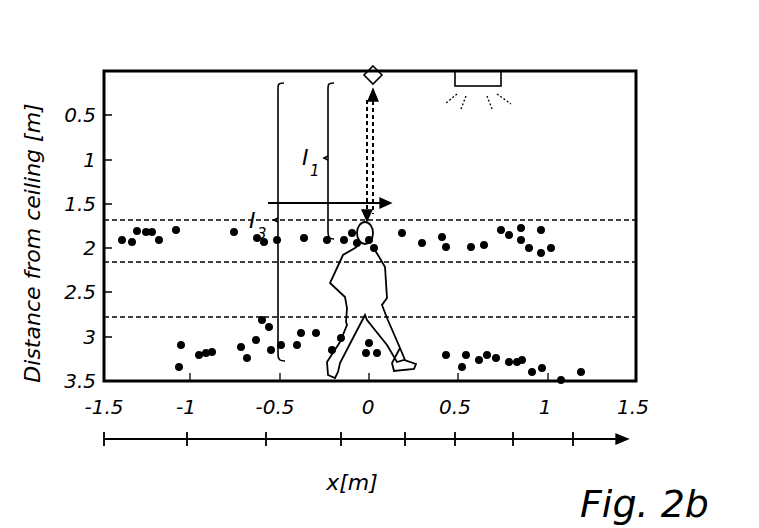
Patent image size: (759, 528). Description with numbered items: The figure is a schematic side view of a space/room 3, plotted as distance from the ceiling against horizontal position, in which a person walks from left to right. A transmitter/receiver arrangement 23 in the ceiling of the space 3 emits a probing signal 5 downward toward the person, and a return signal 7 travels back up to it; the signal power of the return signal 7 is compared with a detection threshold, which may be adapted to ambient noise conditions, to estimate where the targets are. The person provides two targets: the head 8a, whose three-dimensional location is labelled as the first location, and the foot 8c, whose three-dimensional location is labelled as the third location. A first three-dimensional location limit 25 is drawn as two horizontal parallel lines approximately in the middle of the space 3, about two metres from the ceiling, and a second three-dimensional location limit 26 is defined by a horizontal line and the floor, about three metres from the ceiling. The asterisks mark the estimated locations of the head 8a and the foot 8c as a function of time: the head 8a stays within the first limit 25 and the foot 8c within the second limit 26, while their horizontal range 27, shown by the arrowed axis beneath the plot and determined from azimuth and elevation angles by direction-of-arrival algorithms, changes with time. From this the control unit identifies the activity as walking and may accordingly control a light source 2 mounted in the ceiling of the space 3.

The light source 2 is at (480, 77).
The space/room 3 is at (636, 97).
The probing signal 5 is at (366, 148).
The return signal 7 is at (375, 145).
The head 8a is at (354, 323).
The foot 8c is at (327, 362).
The transmitter/receiver arrangement 23 is at (377, 66).
The first three-dimensional location limit 25 is at (646, 220).
The second three-dimensional location limit 26 is at (646, 317).
The horizontal range 27 is at (382, 439).